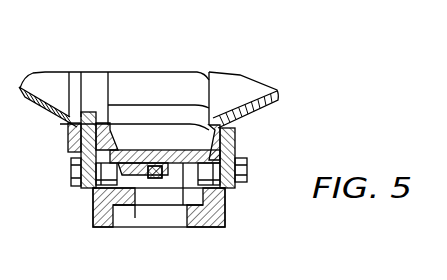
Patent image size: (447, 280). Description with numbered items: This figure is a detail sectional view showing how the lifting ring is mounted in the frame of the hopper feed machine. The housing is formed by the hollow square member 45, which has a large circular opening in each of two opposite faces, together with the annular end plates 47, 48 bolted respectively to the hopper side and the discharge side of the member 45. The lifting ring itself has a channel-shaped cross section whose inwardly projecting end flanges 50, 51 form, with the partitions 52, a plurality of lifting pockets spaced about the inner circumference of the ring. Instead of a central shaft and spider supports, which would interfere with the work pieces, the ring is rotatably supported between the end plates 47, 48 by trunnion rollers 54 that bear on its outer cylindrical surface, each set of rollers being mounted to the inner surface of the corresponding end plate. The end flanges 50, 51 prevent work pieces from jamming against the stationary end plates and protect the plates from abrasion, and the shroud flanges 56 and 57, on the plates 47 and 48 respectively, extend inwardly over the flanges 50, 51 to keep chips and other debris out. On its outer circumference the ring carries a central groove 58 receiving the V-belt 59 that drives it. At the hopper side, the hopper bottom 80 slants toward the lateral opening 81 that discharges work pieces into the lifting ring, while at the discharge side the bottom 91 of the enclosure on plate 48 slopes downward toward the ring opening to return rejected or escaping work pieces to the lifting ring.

The hollow square member 45 is at (227, 218).
The annular end plate 47 is at (80, 149).
The annular end plate 48 is at (250, 155).
The end flange 50 is at (78, 152).
The end flange 51 is at (236, 149).
The partition 52 is at (153, 83).
The trunnion roller 54 is at (90, 190).
The shroud flange 56 is at (68, 125).
The shroud flange 57 is at (262, 121).
The central groove 58 is at (178, 167).
The V-belt 59 is at (150, 170).
The hopper bottom 80 is at (45, 78).
The lateral opening 81 is at (75, 77).
The enclosure bottom 91 is at (256, 98).